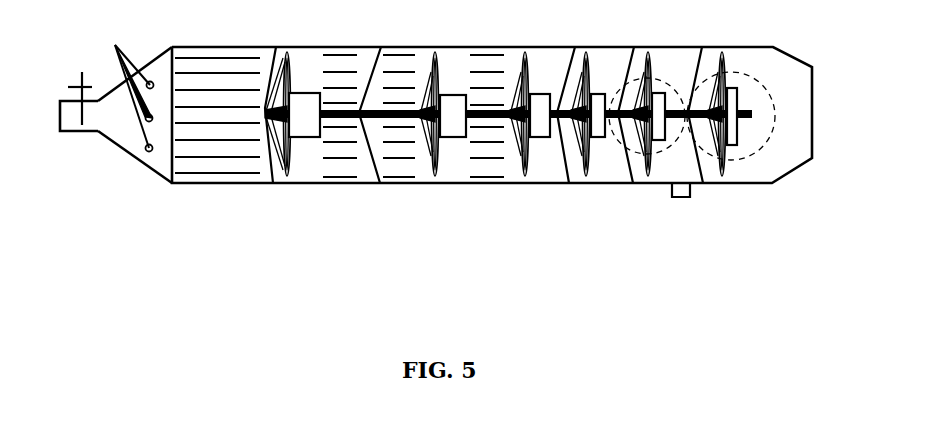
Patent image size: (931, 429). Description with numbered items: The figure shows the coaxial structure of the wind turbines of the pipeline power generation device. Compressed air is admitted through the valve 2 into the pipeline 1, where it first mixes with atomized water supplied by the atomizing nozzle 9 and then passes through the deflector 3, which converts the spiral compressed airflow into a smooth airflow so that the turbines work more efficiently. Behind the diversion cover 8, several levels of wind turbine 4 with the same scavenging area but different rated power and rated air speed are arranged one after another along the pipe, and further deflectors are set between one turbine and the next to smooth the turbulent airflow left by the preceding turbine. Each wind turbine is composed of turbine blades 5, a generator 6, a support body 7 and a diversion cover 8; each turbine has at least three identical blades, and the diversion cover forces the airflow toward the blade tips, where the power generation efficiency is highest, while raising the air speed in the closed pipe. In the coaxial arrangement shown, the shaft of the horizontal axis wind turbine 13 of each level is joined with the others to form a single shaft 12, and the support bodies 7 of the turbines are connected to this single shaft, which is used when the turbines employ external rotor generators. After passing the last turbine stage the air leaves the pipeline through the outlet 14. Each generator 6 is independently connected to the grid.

The pipeline 1 is at (460, 186).
The valve 2 is at (84, 90).
The deflector 3 is at (217, 147).
The wind turbine 4 is at (744, 73).
The turbine blade 5 is at (288, 181).
The generator 6 is at (307, 131).
The support body 7 is at (272, 65).
The diversion cover 8 is at (280, 52).
The atomizing nozzle 9 is at (133, 88).
The single shaft 12 is at (488, 118).
The shaft of the horizontal axis wind turbine 13 is at (325, 118).
The outlet 14 is at (690, 198).